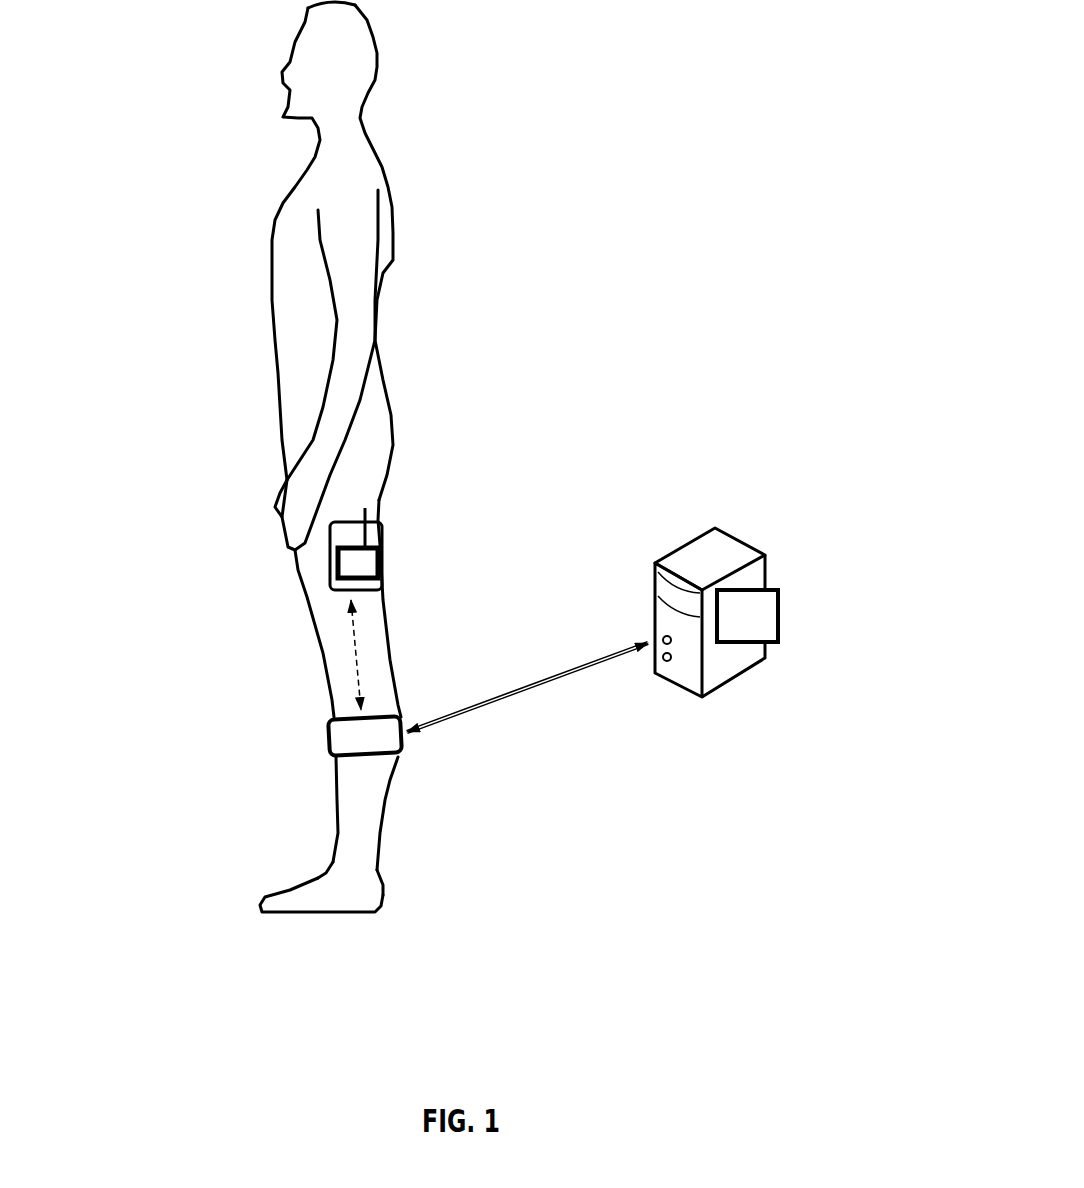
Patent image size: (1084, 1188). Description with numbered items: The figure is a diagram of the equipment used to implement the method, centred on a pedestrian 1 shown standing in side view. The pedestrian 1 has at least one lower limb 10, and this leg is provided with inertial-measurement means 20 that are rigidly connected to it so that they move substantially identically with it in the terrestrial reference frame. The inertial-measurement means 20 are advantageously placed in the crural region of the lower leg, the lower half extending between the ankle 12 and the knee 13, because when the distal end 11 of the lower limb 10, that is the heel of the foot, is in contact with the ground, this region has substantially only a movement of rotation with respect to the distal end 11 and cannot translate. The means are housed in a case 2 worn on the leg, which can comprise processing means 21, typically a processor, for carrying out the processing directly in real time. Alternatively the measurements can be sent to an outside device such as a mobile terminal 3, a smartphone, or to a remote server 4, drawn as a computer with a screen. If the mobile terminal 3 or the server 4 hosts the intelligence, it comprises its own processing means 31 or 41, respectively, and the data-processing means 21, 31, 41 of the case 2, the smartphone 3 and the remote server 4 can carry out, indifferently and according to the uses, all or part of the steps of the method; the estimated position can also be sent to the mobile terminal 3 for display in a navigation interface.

The pedestrian 1 is at (270, 283).
The lower limb 10 is at (335, 830).
The distal end of the lower limb 11 is at (367, 913).
The ankle 12 is at (353, 870).
The knee 13 is at (327, 698).
The case 2 is at (253, 743).
The inertial-measurement means 20 is at (365, 736).
The processing means of the case 21 is at (328, 736).
The mobile terminal 3 is at (416, 512).
The processing means of the mobile terminal 31 is at (386, 567).
The remote server 4 is at (776, 564).
The processing means of the remote server 41 is at (781, 620).